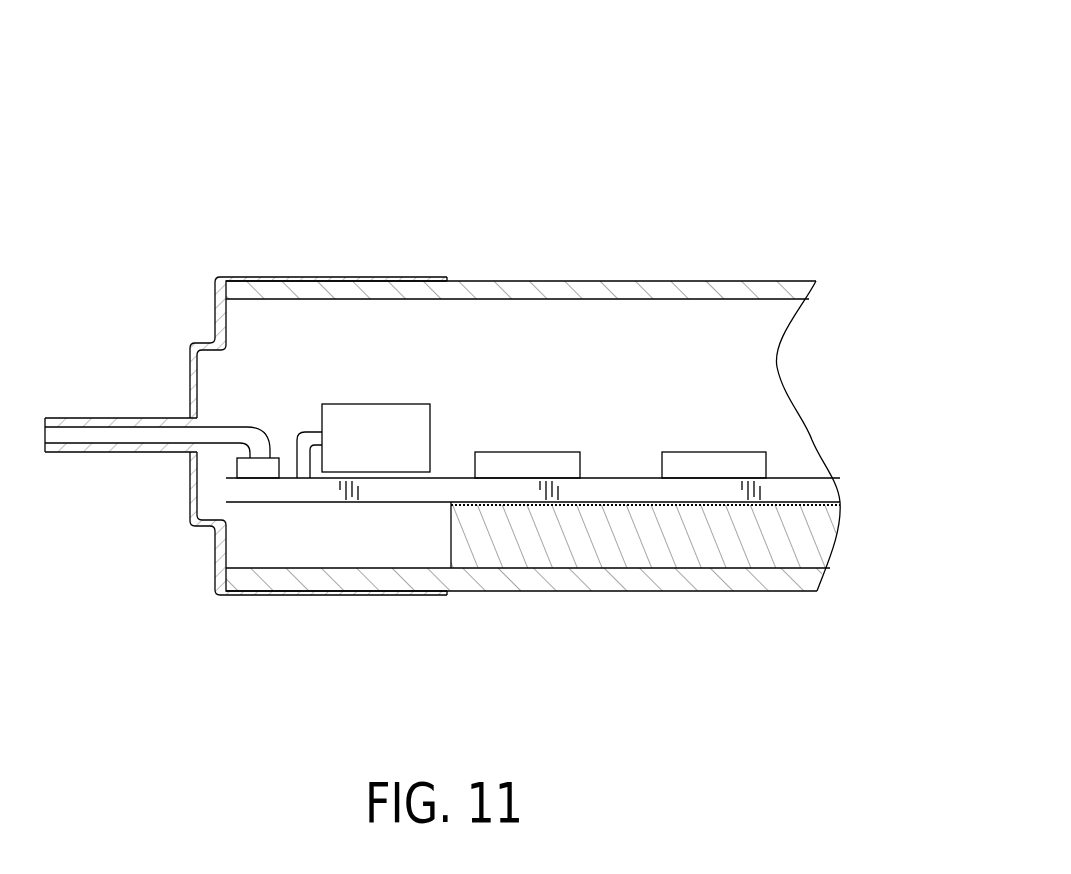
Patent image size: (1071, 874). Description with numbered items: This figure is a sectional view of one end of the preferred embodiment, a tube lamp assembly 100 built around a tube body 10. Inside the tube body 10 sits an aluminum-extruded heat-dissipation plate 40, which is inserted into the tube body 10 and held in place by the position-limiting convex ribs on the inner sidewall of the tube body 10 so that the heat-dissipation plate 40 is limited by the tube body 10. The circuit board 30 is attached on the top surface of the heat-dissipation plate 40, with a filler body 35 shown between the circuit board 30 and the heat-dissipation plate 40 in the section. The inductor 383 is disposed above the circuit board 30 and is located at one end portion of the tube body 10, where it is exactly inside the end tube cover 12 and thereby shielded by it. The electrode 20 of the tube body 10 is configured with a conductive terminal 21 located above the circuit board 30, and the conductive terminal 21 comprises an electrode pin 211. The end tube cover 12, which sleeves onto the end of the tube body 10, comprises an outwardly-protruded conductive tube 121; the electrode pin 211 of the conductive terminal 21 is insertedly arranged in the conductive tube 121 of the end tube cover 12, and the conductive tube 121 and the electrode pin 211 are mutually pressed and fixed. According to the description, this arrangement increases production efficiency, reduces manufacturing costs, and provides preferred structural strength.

The electronic device 100 is at (722, 204).
The tube body 10 is at (528, 281).
The end tube cover 12 is at (353, 277).
The conductive tube 121 is at (77, 422).
The electrode 20 is at (140, 418).
The conductive terminal 21 is at (272, 462).
The electrode pin 211 is at (118, 433).
The circuit board 30 is at (622, 478).
The filler block 35 is at (717, 462).
The inductor 383 is at (400, 420).
The heat-dissipation plate 40 is at (538, 568).